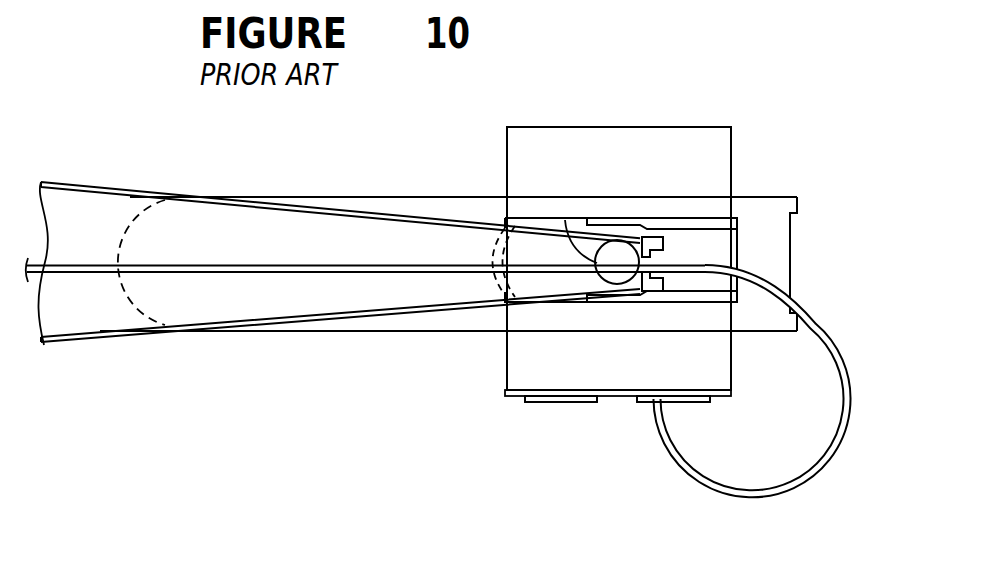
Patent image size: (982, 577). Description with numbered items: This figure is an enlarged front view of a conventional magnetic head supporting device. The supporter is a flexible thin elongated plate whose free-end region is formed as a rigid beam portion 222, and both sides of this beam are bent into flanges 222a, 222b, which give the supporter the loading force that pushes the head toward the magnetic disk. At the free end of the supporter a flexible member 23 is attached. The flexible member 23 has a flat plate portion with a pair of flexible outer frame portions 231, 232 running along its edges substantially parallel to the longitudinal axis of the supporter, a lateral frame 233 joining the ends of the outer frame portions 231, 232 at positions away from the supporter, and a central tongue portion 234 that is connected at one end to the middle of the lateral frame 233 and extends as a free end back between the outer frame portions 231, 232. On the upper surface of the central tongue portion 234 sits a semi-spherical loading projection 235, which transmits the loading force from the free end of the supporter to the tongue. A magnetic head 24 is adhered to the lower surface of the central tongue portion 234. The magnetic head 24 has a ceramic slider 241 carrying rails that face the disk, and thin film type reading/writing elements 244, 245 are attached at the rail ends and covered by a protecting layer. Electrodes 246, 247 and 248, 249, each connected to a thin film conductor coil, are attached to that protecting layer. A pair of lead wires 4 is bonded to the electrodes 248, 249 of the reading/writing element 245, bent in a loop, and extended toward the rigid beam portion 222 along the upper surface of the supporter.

The lead wires 4 is at (782, 490).
The flexible member 23 is at (366, 196).
The magnetic head 24 is at (507, 166).
The rigid beam portion 222 is at (97, 192).
The flange 222a is at (152, 190).
The flange 222b is at (115, 346).
The flexible outer frame portion 231 is at (613, 205).
The flexible outer frame portion 232 is at (533, 316).
The lateral frame 233 is at (760, 237).
The central tongue portion 234 is at (708, 248).
The loading projection 235 is at (565, 220).
The slider 241 is at (660, 155).
The reading/writing element 244 is at (527, 404).
The reading/writing element 245 is at (691, 416).
The electrode 246 is at (574, 403).
The electrode 247 is at (561, 399).
The electrode 248 is at (697, 393).
The electrode 249 is at (726, 411).